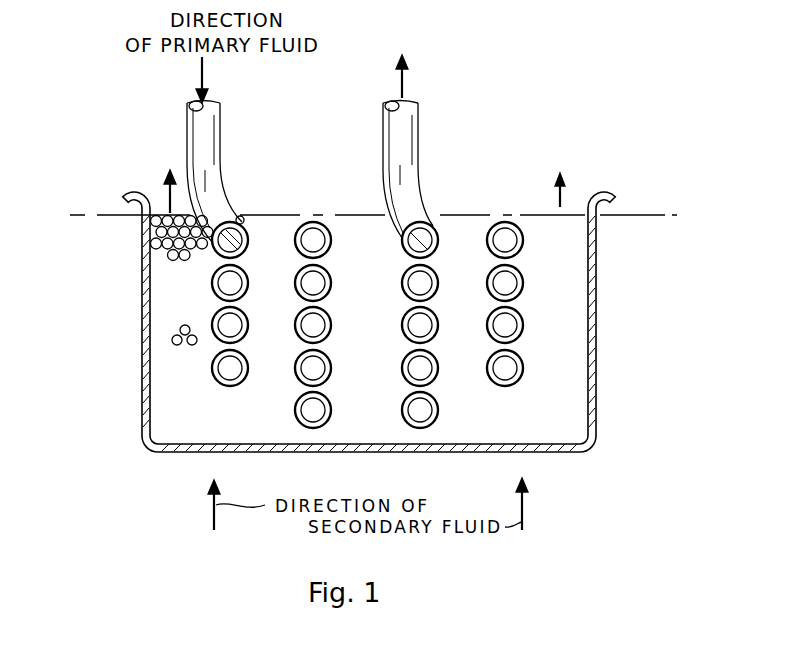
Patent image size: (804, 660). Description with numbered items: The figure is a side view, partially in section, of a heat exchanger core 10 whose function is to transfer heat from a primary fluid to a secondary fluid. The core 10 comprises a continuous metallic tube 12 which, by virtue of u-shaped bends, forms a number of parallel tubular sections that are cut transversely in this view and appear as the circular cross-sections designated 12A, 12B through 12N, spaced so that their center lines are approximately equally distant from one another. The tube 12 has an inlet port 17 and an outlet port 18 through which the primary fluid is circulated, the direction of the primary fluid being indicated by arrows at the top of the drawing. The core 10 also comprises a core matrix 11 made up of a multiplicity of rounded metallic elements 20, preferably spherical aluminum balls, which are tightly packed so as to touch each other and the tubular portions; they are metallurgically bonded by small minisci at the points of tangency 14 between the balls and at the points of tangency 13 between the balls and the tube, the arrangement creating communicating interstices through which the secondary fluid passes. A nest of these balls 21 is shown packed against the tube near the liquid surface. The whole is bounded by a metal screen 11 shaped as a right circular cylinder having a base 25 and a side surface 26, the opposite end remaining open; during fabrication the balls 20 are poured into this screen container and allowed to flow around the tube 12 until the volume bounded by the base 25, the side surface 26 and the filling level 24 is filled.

The heat exchanger core 10 is at (597, 410).
The metal screen 11 is at (143, 406).
The tube 12 is at (223, 177).
The tubular portion 12A is at (215, 262).
The tubular portion 12B is at (215, 295).
The tubular portion 12N is at (522, 364).
The points of tangency between balls and tubular portions 13 is at (190, 216).
The points of tangency between balls 14 is at (175, 334).
The inlet port 17 is at (217, 103).
The outlet port 18 is at (416, 103).
The rounded metallic elements 20 is at (172, 260).
The particle layer 21 is at (150, 233).
The filling level 24 is at (105, 213).
The base 25 is at (548, 453).
The side surface 26 is at (597, 240).